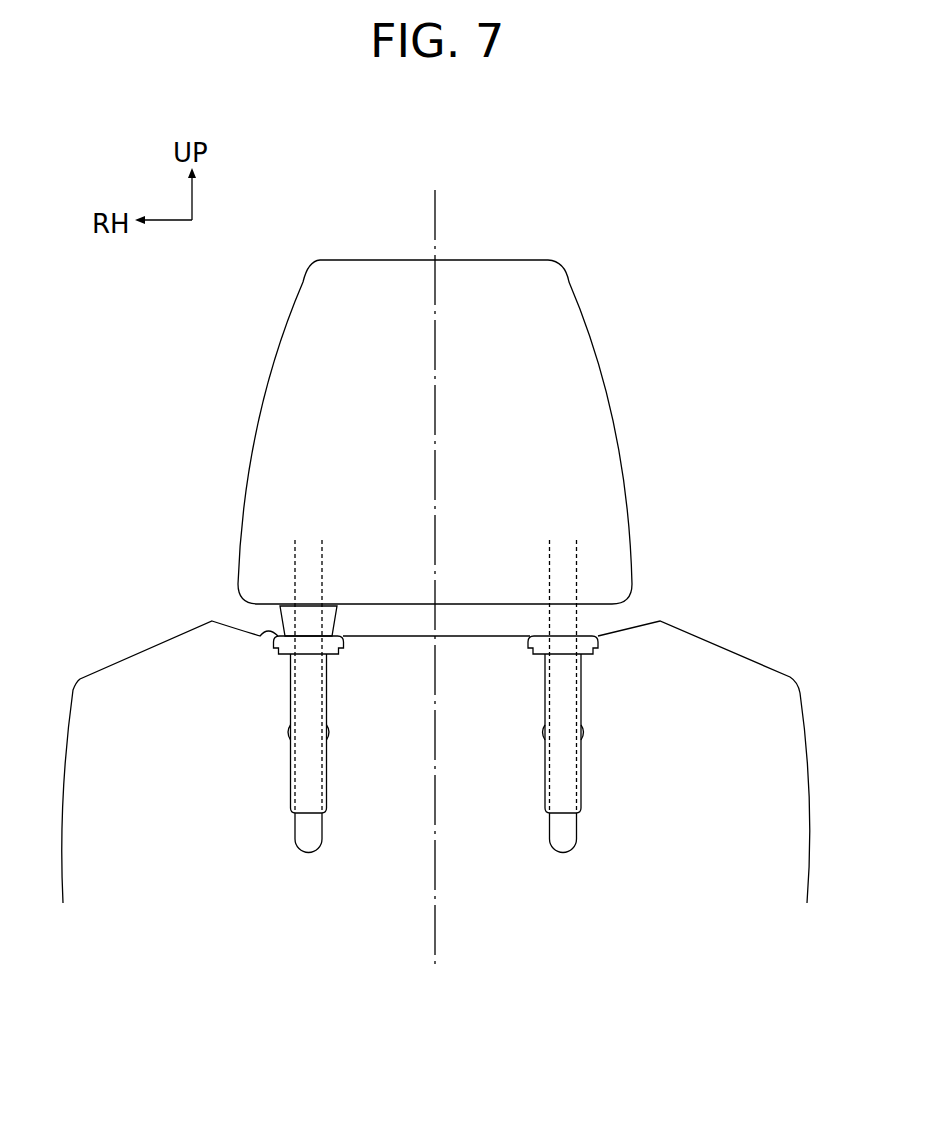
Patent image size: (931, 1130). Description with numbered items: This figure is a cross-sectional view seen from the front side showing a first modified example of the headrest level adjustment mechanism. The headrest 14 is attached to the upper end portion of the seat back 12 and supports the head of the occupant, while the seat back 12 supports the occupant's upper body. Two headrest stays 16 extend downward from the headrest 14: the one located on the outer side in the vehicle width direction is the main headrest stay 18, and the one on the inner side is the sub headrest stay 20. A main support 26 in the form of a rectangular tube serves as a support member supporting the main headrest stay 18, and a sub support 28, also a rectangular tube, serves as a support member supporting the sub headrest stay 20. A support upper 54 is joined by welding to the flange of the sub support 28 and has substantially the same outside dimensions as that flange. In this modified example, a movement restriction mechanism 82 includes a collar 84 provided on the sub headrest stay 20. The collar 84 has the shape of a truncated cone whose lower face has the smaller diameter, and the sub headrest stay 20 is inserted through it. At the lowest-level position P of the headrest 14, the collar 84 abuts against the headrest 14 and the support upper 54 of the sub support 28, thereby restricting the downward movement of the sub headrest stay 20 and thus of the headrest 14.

The seat back 12 is at (747, 673).
The headrest 14 is at (612, 493).
The headrest stays 16 is at (435, 696).
The main headrest stay 18 is at (577, 835).
The sub headrest stay 20 is at (305, 833).
The main support 26 is at (592, 702).
The sub support 28 is at (283, 702).
The support upper 54 is at (262, 633).
The movement restriction mechanism 82 is at (222, 602).
The collar 84 is at (310, 618).
The lowest-level position P is at (665, 385).